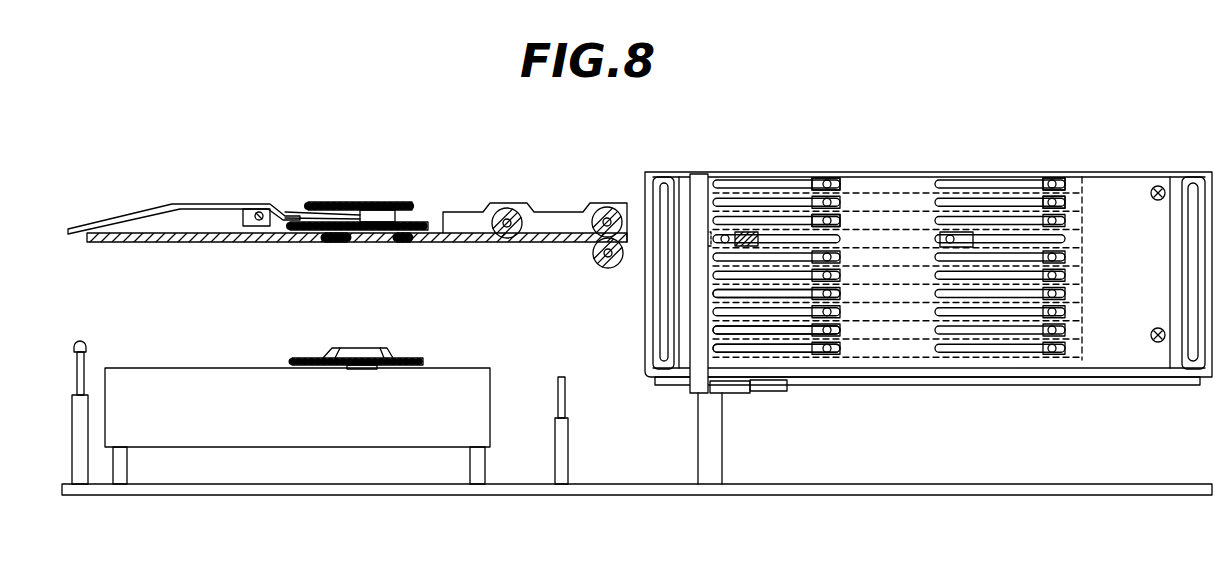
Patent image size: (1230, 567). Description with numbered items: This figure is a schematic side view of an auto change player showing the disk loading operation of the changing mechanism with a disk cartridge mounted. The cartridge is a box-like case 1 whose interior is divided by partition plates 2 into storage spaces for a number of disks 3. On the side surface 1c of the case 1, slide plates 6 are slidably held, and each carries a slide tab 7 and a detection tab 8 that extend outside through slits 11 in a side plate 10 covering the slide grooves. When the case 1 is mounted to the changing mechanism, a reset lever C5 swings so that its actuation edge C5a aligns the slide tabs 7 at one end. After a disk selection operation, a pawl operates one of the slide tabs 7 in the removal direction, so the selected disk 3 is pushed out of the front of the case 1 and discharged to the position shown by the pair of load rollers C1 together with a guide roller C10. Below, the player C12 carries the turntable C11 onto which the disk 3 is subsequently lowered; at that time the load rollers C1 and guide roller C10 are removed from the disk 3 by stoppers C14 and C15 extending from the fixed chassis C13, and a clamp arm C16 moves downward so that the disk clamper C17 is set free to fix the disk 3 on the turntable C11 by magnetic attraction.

The case 1 is at (1120, 172).
The side surface 1c is at (1113, 192).
The partition plate 2 is at (742, 235).
The disk 3 is at (222, 243).
The slide plate 6 is at (897, 222).
The slide tab 7 is at (840, 218).
The detection tab 8 is at (948, 240).
The side plate 10 is at (1115, 350).
The slit 11 is at (778, 293).
The load roller C1 is at (607, 207).
The reset lever C5 is at (735, 393).
The actuation edge C5a is at (712, 178).
The guide roller C10 is at (507, 208).
The turntable C11 is at (303, 357).
The player C12 is at (183, 375).
The fixed chassis C13 is at (598, 500).
The stopper C14 is at (83, 356).
The stopper C15 is at (557, 450).
The clamp arm C16 is at (181, 205).
The disk clamper C17 is at (315, 205).